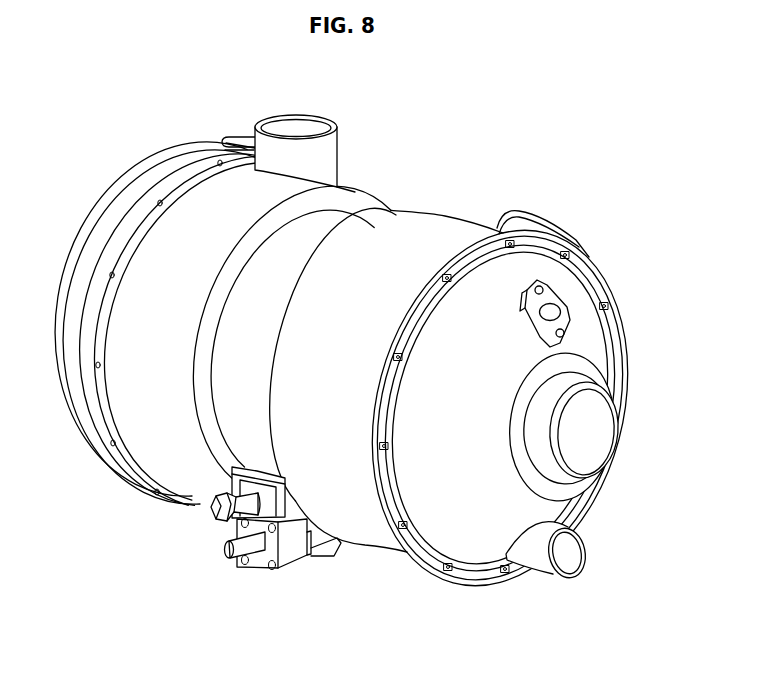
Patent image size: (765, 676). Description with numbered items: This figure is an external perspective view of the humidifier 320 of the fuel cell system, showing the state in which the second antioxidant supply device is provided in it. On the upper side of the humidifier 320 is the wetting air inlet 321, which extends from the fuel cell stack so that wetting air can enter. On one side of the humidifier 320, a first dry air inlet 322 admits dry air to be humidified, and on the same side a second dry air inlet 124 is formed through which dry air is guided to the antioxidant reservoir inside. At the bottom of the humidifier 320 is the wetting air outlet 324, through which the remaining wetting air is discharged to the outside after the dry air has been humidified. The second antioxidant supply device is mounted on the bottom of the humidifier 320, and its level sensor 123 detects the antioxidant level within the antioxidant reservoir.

The humidifier 320 is at (359, 192).
The wetting air inlet 321 is at (300, 124).
The first dry air inlet 322 is at (598, 414).
The level sensor 123 is at (221, 503).
The second dry air inlet 124 is at (568, 557).
The wetting air outlet 324 is at (295, 553).